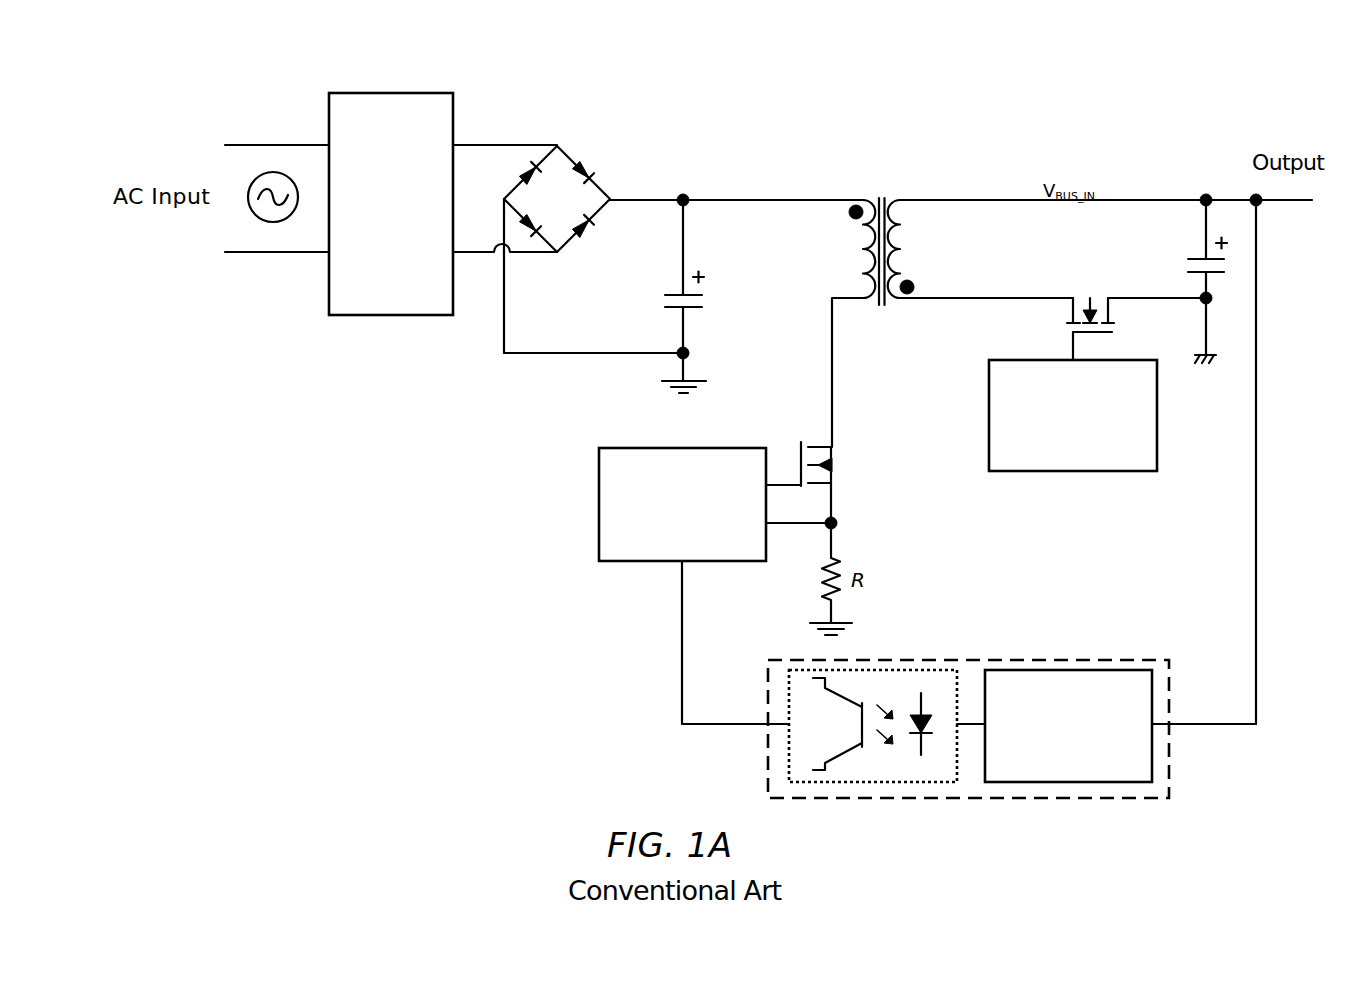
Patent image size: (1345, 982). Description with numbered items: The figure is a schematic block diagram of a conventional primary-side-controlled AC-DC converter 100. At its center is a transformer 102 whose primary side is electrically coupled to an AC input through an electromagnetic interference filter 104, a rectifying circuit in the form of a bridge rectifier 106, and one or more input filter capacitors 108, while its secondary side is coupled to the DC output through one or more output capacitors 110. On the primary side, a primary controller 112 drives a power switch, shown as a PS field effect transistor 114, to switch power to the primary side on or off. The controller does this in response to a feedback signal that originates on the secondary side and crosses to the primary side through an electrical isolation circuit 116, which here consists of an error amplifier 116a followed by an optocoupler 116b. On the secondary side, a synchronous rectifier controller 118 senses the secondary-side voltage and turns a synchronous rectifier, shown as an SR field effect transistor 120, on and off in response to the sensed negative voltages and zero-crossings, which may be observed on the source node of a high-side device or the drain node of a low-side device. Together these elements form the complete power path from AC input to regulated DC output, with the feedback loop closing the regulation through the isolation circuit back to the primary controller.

The PSC AC-DC converter 100 is at (188, 39).
The transformer 102 is at (874, 168).
The electromagnetic interference filter 104 is at (391, 316).
The bridge rectifier 106 is at (557, 120).
The input filter capacitor 108 is at (675, 296).
The output capacitor 110 is at (1200, 259).
The primary controller 112 is at (688, 448).
The PS field effect transistor 114 is at (835, 453).
The electrical isolation circuit 116 is at (968, 698).
The error amplifier 116a is at (1090, 773).
The optocoupler 116b is at (896, 773).
The synchronous rectifier controller 118 is at (1073, 472).
The SR field effect transistor 120 is at (1081, 270).